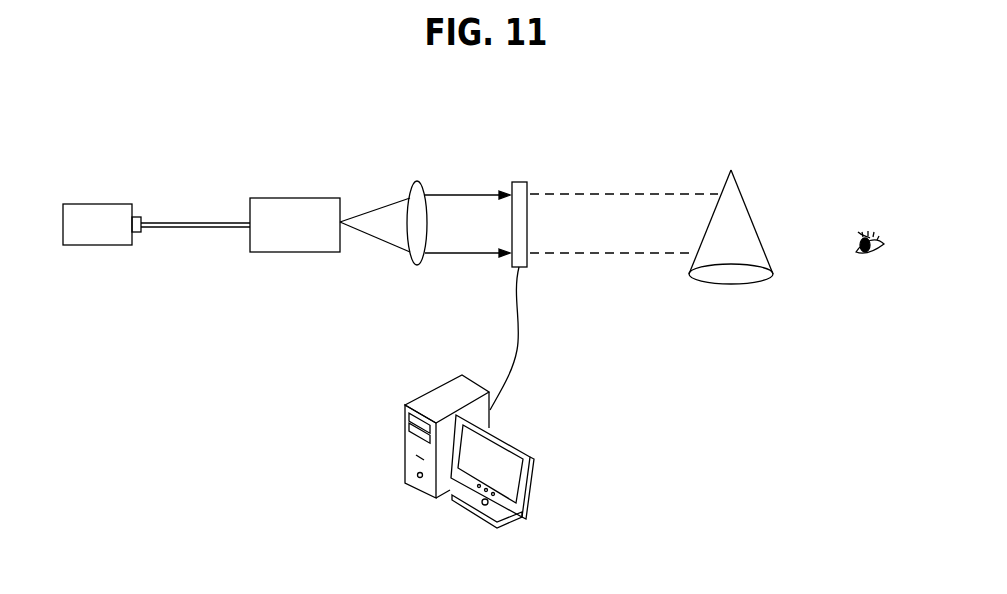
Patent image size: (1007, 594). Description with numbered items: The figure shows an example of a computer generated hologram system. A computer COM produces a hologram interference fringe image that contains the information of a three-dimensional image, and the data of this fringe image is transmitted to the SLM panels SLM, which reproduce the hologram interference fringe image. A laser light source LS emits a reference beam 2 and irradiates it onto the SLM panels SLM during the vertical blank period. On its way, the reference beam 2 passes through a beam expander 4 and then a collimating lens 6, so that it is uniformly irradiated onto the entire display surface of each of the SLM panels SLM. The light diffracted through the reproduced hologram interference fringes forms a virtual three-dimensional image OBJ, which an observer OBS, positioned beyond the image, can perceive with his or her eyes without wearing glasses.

The reference beam 2 is at (170, 222).
The beam expander 4 is at (297, 253).
The collimating lens 6 is at (418, 267).
The laser light source LS is at (98, 246).
The SLM panels SLM is at (519, 182).
The virtual 3D image OBJ is at (729, 289).
The observer OBS is at (876, 205).
The computer COM is at (405, 445).